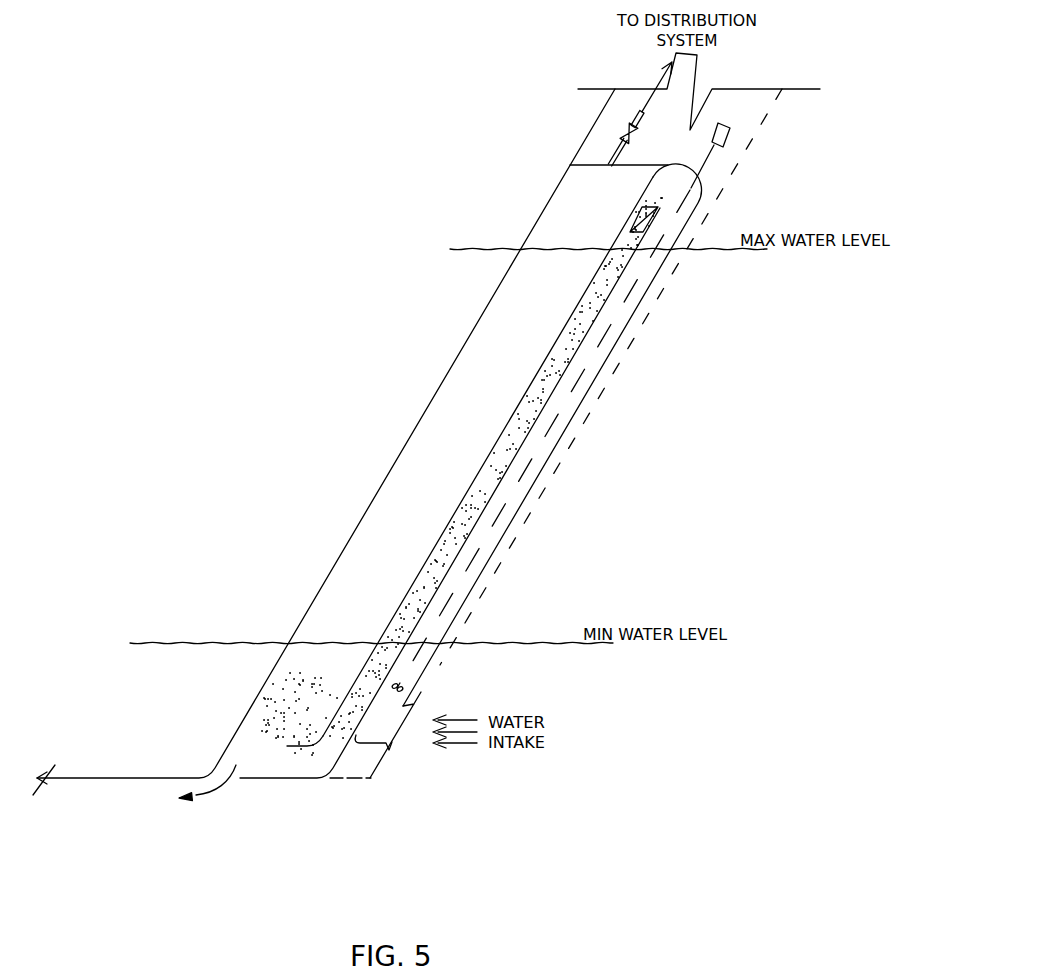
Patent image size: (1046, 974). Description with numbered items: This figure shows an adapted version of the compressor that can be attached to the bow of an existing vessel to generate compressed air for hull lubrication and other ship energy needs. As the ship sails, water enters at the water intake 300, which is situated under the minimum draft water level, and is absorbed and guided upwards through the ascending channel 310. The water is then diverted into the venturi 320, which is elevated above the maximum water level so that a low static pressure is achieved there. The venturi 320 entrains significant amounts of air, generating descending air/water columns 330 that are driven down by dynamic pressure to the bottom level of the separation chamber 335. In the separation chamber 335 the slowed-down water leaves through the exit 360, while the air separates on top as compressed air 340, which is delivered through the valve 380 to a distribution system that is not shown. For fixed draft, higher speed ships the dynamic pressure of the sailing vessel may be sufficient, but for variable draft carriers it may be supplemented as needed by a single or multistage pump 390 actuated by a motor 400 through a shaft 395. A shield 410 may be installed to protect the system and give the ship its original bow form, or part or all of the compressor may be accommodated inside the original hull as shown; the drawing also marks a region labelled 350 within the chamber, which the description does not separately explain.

The water intake 300 is at (404, 738).
The ascending channel 310 is at (599, 370).
The venturi 320 is at (640, 218).
The descending air/water columns 330 is at (466, 493).
The separation chamber 335 is at (345, 549).
The compressed air 340 is at (333, 596).
The gravel pack 350 is at (277, 694).
The exit 360 is at (239, 772).
The valve 380 is at (626, 133).
The single or multistage pump 390 is at (400, 687).
The shaft 395 is at (619, 311).
The motor 400 is at (728, 137).
The shield 410 is at (742, 176).